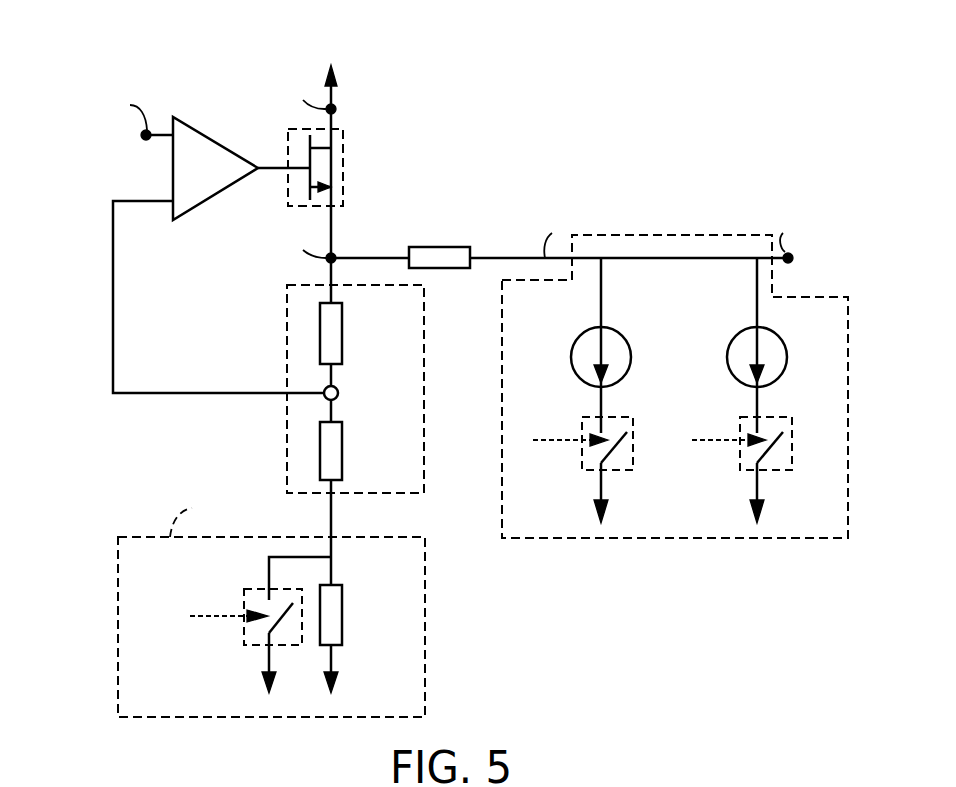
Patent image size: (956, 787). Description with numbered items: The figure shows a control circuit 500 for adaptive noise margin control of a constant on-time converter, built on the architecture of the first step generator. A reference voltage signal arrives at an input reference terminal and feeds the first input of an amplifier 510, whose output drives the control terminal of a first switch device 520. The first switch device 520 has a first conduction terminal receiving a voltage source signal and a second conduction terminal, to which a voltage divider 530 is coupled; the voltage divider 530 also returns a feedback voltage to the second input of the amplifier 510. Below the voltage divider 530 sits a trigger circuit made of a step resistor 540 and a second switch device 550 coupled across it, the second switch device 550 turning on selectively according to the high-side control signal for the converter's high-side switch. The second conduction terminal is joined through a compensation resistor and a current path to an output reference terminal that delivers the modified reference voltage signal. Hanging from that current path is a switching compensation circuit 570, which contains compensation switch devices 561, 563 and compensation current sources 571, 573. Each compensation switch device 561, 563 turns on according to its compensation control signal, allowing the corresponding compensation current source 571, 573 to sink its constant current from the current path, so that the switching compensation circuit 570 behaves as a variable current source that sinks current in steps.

The control circuit 500 is at (95, 37).
The amplifier 510 is at (207, 138).
The first switch device 520 is at (343, 160).
The voltage divider 530 is at (424, 385).
The step resistor 540 is at (342, 635).
The second switch device 550 is at (243, 637).
The compensation switch device 561 is at (582, 453).
The compensation switch device 563 is at (740, 453).
The switching compensation circuit 570 is at (675, 427).
The compensation current source 571 is at (587, 333).
The compensation current source 573 is at (742, 333).